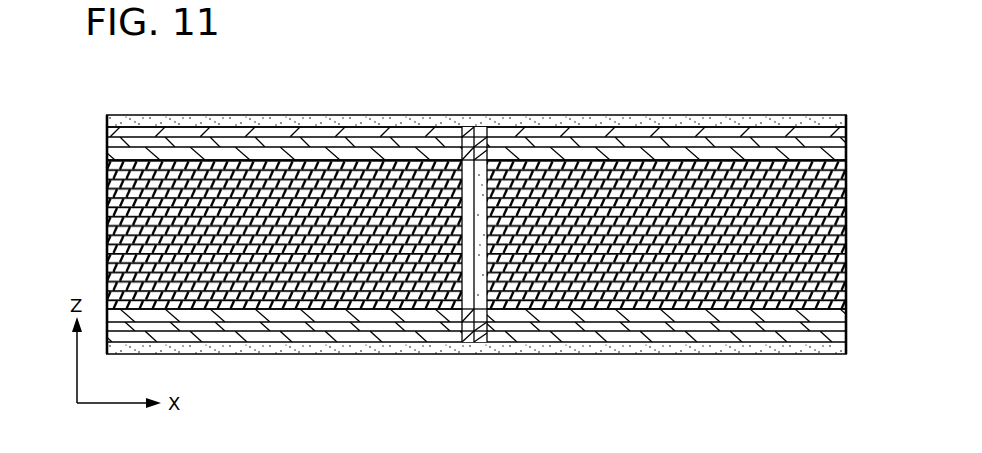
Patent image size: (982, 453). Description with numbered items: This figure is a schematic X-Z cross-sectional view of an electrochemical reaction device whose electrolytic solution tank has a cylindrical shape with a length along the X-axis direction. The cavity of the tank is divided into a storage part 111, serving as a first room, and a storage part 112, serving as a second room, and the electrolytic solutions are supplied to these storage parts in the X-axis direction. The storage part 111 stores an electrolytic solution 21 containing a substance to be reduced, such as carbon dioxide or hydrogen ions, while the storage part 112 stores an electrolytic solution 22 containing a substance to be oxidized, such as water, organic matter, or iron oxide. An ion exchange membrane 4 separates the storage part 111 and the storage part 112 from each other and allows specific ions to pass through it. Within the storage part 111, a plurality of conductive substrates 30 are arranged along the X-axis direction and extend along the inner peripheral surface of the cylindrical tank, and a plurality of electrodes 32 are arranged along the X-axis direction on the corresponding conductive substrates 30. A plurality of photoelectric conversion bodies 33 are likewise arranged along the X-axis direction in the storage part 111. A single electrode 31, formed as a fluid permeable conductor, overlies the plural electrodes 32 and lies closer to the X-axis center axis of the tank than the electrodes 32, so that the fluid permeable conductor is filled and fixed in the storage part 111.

The ion exchange membrane 4 is at (468, 130).
The electrolytic solution 21 is at (303, 158).
The electrolytic solution 22 is at (560, 353).
The conductive substrate 30 is at (847, 160).
The electrode 31 is at (850, 160).
The electrode 32 is at (847, 126).
The photoelectric conversion body 33 is at (847, 137).
The storage part 111 is at (106, 220).
The storage part 112 is at (125, 114).